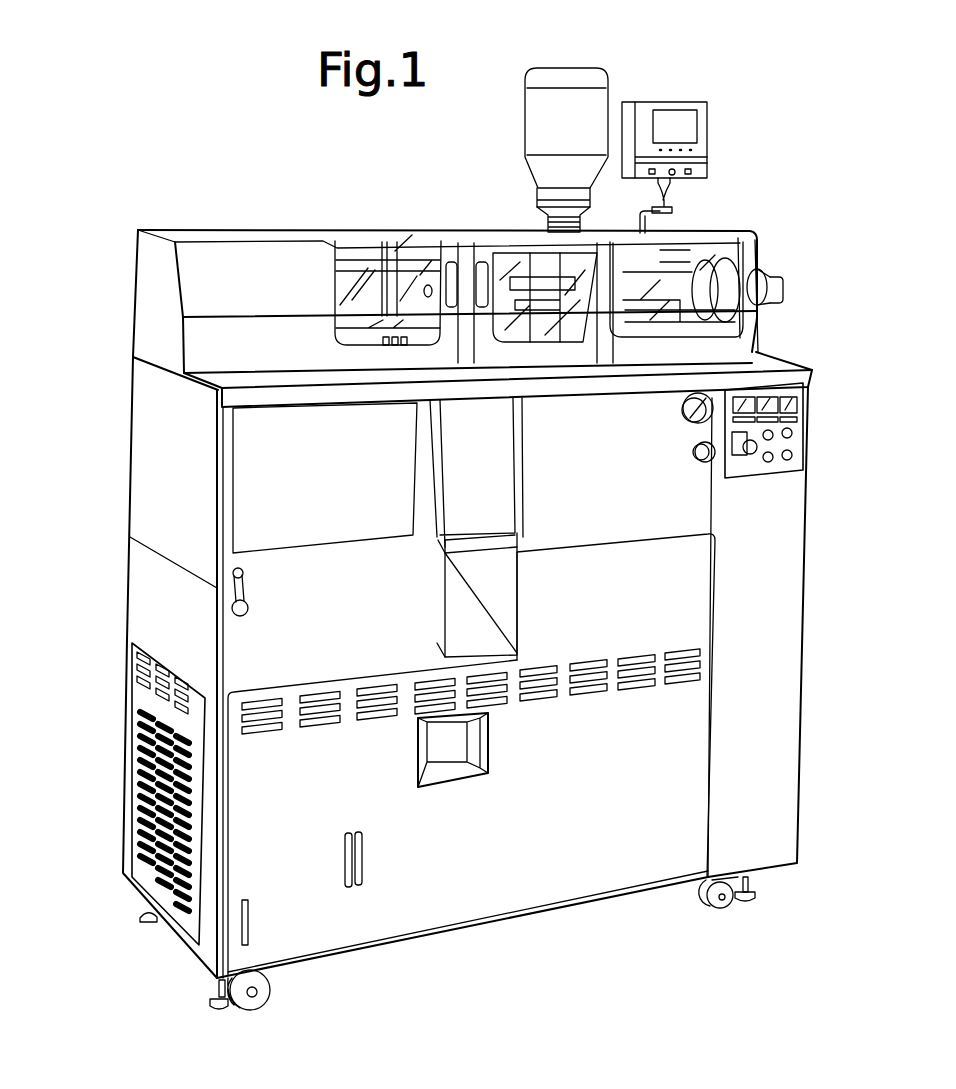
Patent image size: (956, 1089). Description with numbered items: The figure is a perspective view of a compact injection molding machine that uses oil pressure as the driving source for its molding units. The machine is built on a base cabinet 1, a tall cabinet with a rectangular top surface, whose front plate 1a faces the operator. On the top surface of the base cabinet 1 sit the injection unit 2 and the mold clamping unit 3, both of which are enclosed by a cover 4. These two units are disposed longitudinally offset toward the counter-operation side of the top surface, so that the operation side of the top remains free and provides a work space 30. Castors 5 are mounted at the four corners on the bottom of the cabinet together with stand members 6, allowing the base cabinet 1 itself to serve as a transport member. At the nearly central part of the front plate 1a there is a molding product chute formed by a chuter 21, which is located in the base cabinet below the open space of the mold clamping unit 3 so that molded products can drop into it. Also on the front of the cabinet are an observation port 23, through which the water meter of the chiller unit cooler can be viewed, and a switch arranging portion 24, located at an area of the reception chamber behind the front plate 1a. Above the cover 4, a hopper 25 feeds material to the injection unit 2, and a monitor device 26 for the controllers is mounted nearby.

The base cabinet 1 is at (160, 482).
The front plate 1a is at (250, 642).
The injection unit 2 is at (757, 240).
The mold clamping unit 3 is at (390, 318).
The cover 4 is at (250, 240).
The castors 5 is at (250, 1007).
The stand members 6 is at (142, 915).
The chuter 21 is at (460, 617).
The observation port 23 is at (360, 870).
The switch arranging portion 24 is at (770, 393).
The hopper 25 is at (550, 103).
The monitor device 26 is at (672, 115).
The work space 30 is at (318, 373).